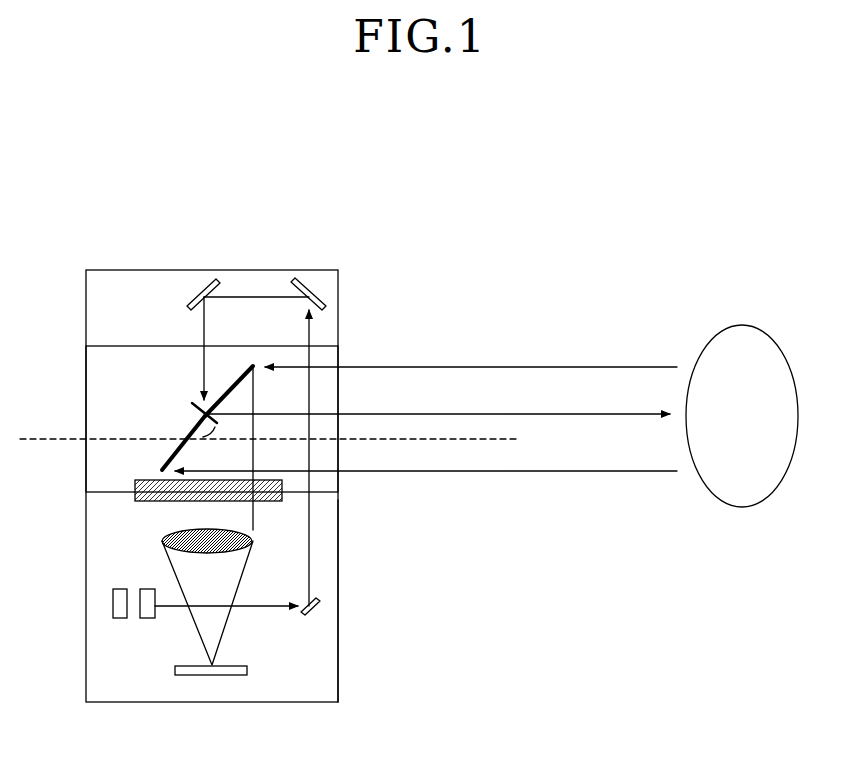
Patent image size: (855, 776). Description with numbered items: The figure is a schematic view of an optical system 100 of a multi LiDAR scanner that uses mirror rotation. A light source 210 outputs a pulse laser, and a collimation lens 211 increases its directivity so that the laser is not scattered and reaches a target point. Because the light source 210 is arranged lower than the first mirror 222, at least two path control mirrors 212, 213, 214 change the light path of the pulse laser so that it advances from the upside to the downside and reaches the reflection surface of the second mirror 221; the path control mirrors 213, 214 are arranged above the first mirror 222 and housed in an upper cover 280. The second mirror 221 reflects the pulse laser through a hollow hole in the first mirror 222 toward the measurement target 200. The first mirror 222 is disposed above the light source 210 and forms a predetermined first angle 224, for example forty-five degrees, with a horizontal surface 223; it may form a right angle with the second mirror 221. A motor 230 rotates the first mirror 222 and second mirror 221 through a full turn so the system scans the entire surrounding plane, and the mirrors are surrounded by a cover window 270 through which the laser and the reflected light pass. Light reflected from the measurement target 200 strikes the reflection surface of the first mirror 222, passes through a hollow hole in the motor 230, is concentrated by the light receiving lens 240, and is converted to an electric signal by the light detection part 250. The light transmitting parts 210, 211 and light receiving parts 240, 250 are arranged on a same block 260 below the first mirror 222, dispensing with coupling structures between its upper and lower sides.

The optical system of multi LiDAR scanner 100 is at (352, 218).
The measurement target 200 is at (745, 325).
The light source 210 is at (112, 606).
The collimation lens 211 is at (140, 617).
The path control mirror 212 is at (320, 603).
The path control mirror 213 is at (300, 285).
The path control mirror 214 is at (212, 285).
The second mirror 221 is at (192, 403).
The first mirror 222 is at (178, 449).
The horizontal surface 223 is at (474, 438).
The first angle 224 is at (218, 436).
The motor 230 is at (135, 497).
The light receiving lens 240 is at (162, 541).
The light detection part 250 is at (227, 676).
The block 260 is at (338, 560).
The cover window 270 is at (86, 372).
The upper cover 280 is at (132, 268).